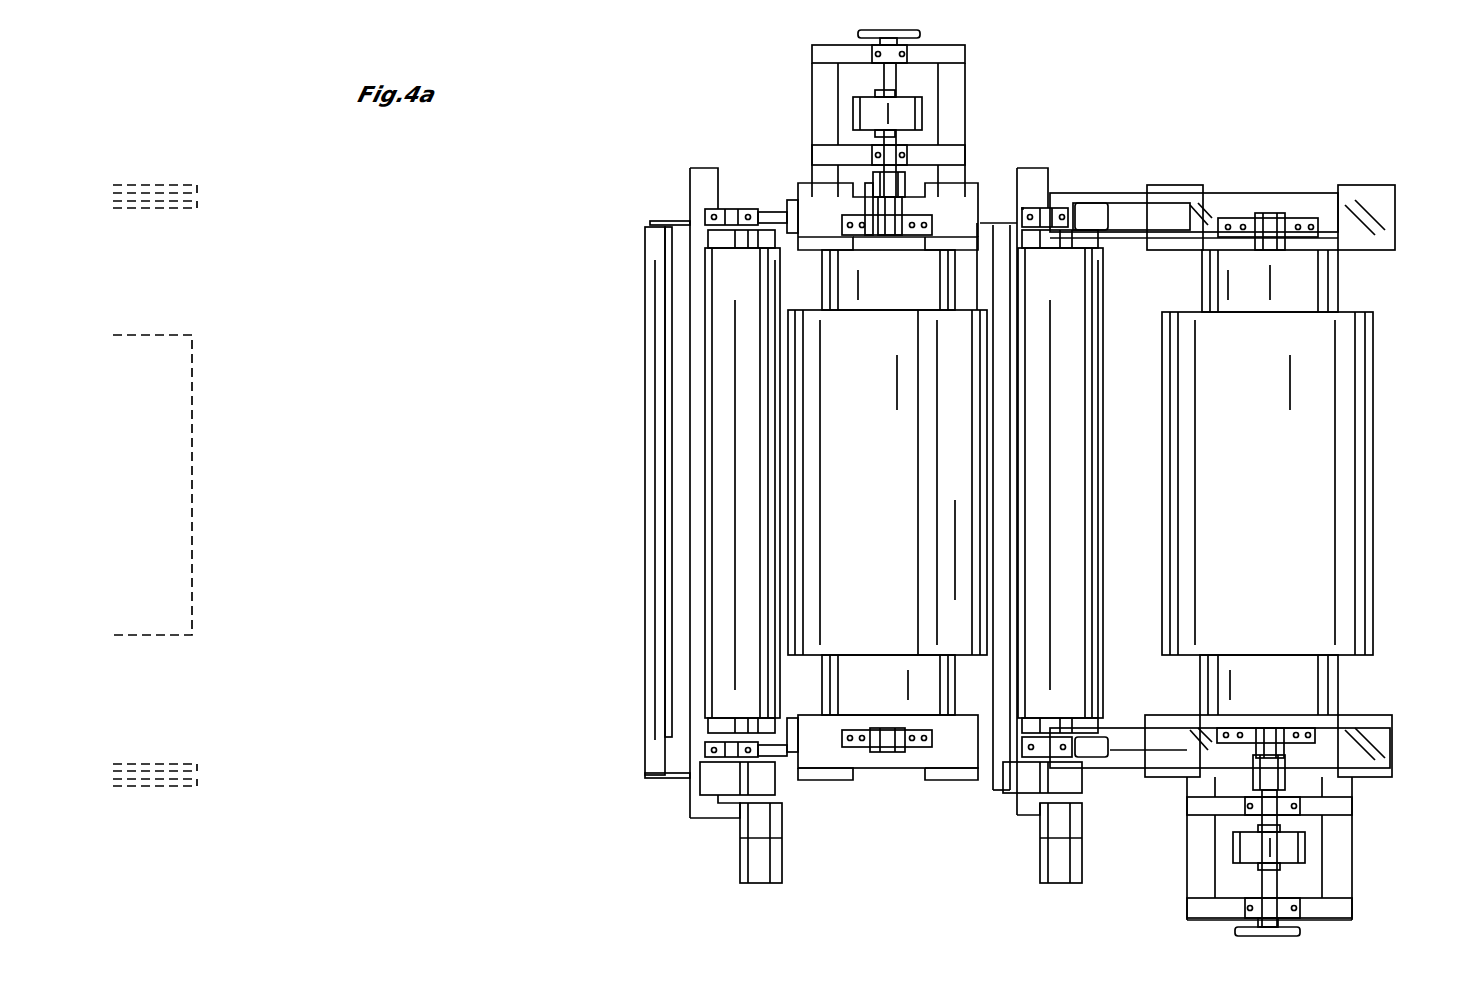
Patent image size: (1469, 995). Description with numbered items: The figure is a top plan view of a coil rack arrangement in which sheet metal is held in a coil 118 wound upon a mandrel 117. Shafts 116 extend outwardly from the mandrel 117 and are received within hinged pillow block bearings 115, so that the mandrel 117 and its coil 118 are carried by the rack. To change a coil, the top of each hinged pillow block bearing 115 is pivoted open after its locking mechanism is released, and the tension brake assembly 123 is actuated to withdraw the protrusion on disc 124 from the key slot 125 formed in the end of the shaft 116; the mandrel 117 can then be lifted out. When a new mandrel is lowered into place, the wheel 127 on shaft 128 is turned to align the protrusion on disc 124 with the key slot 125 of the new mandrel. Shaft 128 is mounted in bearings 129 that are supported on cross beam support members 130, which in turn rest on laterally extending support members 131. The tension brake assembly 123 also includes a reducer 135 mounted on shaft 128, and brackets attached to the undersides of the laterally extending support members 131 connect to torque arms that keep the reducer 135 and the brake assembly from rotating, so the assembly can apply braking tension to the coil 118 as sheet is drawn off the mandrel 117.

The hinged pillow block bearing 115 is at (929, 244).
The shaft 116 is at (897, 217).
The mandrel 117 is at (848, 297).
The coil 118 is at (893, 458).
The tension brake assembly 123 is at (860, 185).
The disc 124 is at (900, 195).
The key slot 125 is at (1268, 752).
The wheel 127 is at (933, 40).
The shaft 128 is at (880, 80).
The bearing 129 is at (895, 58).
The cross beam support member 130 is at (828, 50).
The laterally extending support member 131 is at (955, 100).
The reducer 135 is at (908, 114).